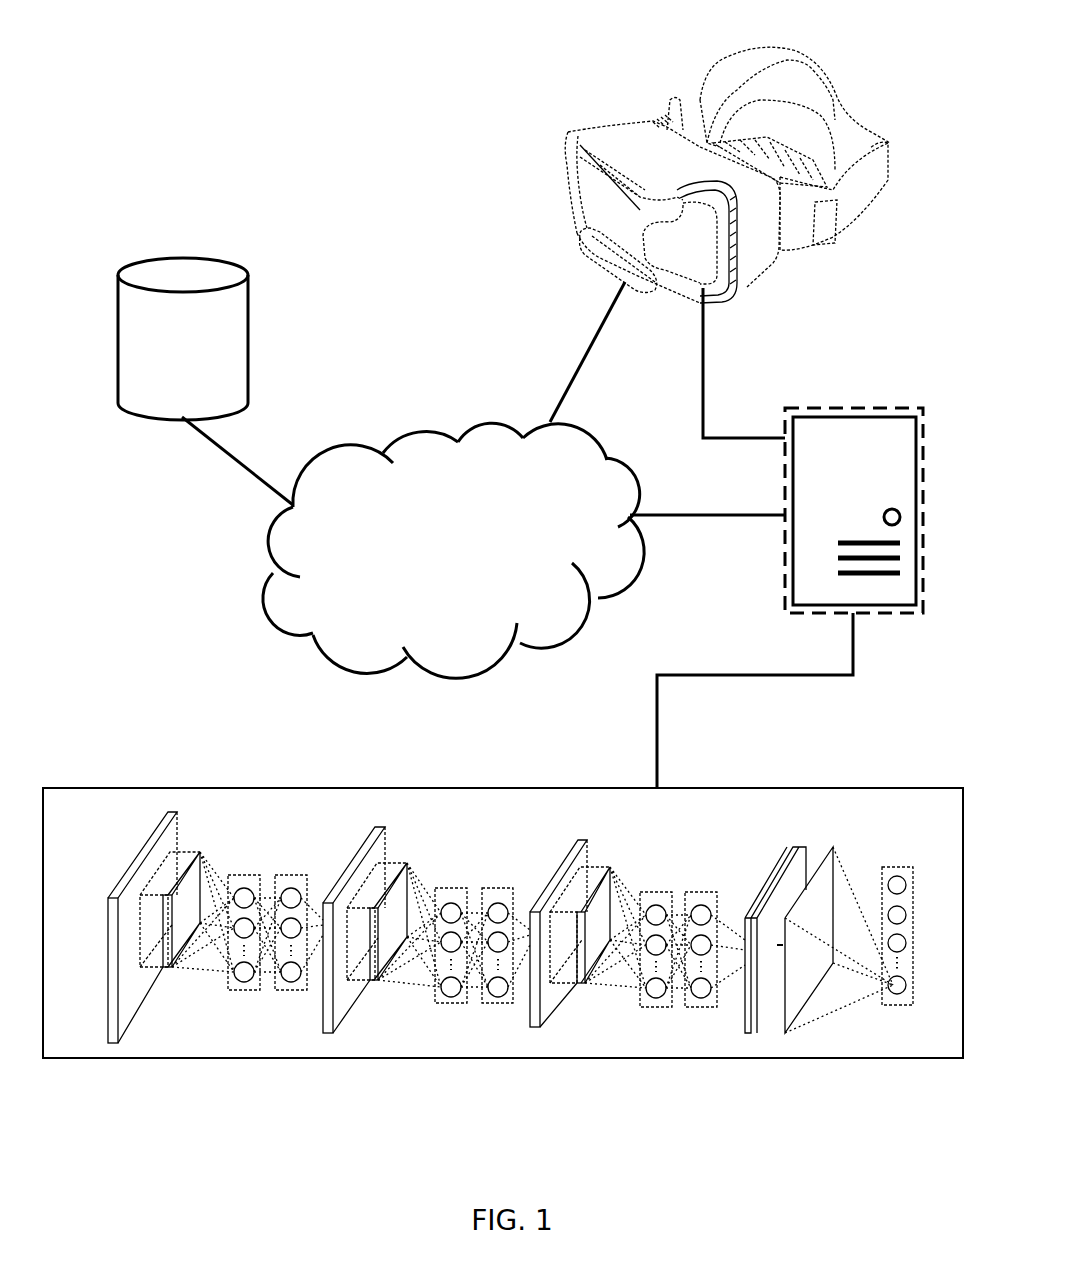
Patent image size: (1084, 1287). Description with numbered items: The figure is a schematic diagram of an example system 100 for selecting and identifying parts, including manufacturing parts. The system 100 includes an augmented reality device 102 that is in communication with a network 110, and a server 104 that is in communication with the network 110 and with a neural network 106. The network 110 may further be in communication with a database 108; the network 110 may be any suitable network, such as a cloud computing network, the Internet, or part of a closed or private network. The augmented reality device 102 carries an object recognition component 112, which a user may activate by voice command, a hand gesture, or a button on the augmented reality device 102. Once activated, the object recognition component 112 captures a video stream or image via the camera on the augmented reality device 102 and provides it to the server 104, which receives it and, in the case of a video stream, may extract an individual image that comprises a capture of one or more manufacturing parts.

The system 100 is at (292, 62).
The augmented reality device 102 is at (655, 120).
The server 104 is at (867, 407).
The neural network 106 is at (277, 1010).
The database 108 is at (227, 262).
The network 110 is at (433, 589).
The object recognition component 112 is at (617, 218).